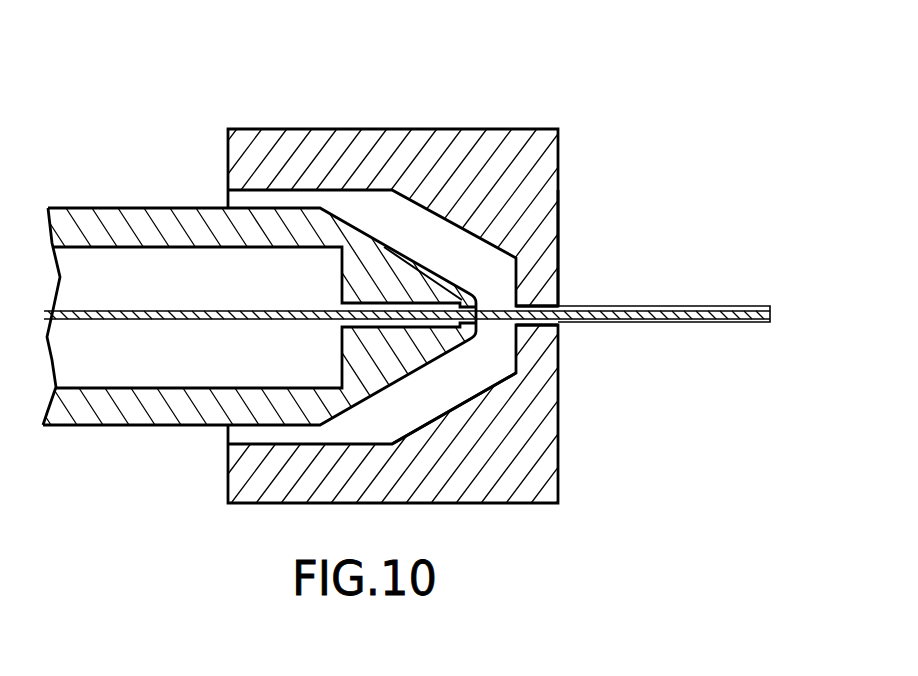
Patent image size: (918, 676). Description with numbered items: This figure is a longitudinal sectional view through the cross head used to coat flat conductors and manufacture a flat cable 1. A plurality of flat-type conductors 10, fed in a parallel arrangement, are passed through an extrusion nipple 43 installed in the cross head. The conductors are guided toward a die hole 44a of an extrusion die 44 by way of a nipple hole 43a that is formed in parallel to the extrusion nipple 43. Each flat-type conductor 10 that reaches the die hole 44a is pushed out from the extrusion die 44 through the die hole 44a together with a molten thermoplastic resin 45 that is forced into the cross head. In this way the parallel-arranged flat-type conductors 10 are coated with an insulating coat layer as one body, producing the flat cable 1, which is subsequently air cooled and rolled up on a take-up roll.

The flat cable 1 is at (715, 305).
The flat-type conductor 10 is at (168, 322).
The extrusion nipple 43 is at (107, 208).
The nipple hole 43a is at (558, 218).
The extrusion die 44 is at (420, 130).
The die hole 44a is at (578, 299).
The molten thermoplastic resin 45 is at (443, 385).